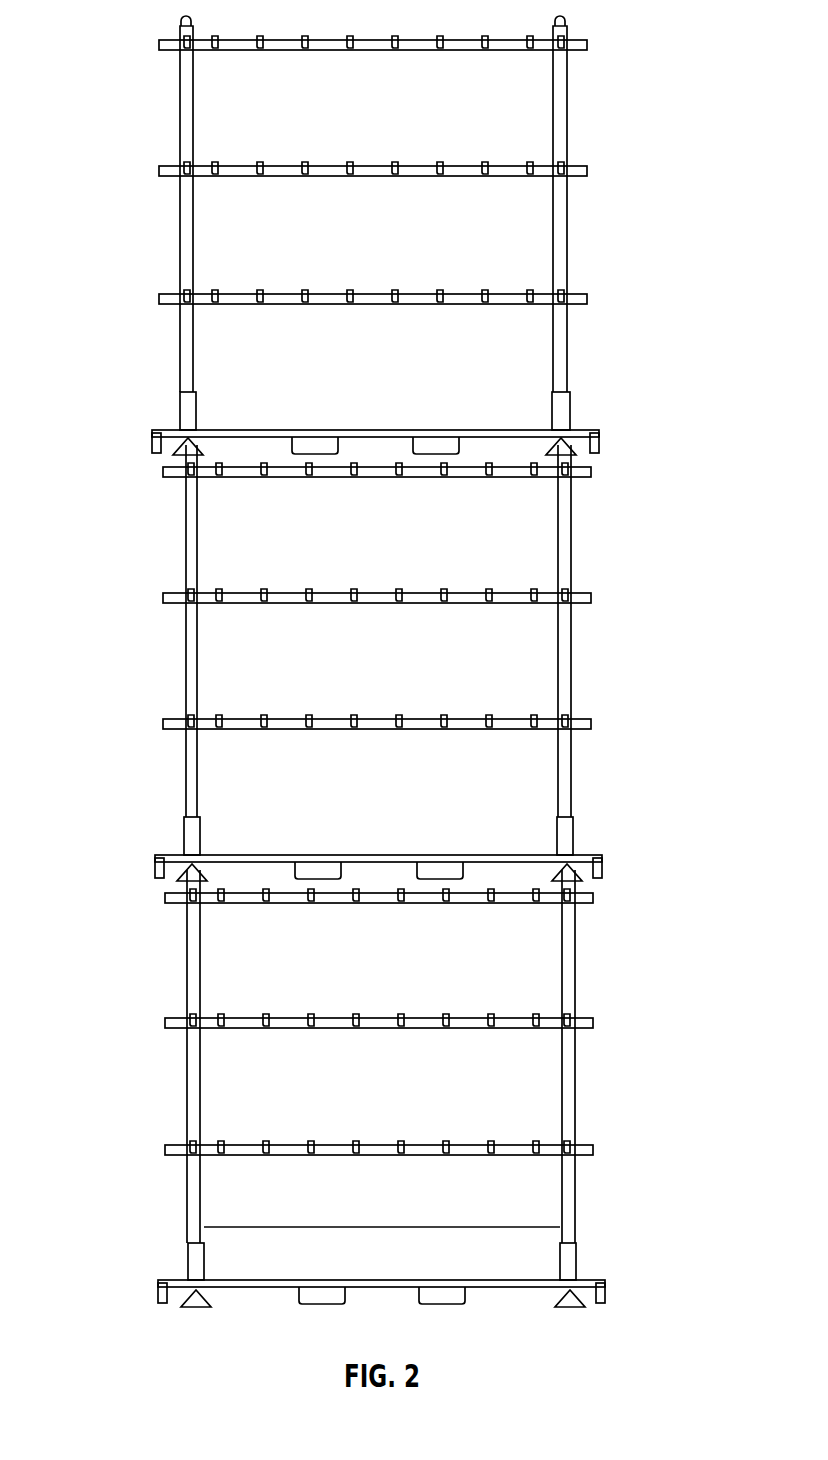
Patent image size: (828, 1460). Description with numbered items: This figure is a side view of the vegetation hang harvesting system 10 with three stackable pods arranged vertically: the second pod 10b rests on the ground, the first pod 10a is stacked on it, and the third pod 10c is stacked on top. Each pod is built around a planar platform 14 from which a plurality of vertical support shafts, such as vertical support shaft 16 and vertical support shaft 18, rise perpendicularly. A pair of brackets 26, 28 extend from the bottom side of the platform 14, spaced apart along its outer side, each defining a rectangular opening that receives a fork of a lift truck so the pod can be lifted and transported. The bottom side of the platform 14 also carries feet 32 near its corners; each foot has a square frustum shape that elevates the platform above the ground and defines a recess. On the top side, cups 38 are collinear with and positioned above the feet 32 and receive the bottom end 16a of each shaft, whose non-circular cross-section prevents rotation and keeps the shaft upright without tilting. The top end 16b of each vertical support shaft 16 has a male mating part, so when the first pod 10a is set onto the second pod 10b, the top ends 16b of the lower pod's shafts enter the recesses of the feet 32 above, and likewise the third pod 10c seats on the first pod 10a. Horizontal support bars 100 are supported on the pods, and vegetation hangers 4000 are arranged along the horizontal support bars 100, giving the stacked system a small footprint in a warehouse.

The vegetation hang harvesting system 10 is at (98, 247).
The first pod 10a is at (597, 700).
The second pod 10b is at (597, 1097).
The third pod 10c is at (628, 270).
The platform 14 is at (383, 855).
The vertical support shaft 16 is at (571, 560).
The bottom end of vertical support shaft 16a is at (572, 797).
The top end of vertical support shaft 16b is at (565, 463).
The vertical support shaft 18 is at (183, 686).
The bracket 26 is at (325, 1308).
The bracket 28 is at (445, 1308).
The feet 32 is at (183, 445).
The cups 38 is at (190, 840).
The horizontal support bars 100 is at (290, 480).
The vegetation hanger 4000 is at (396, 592).